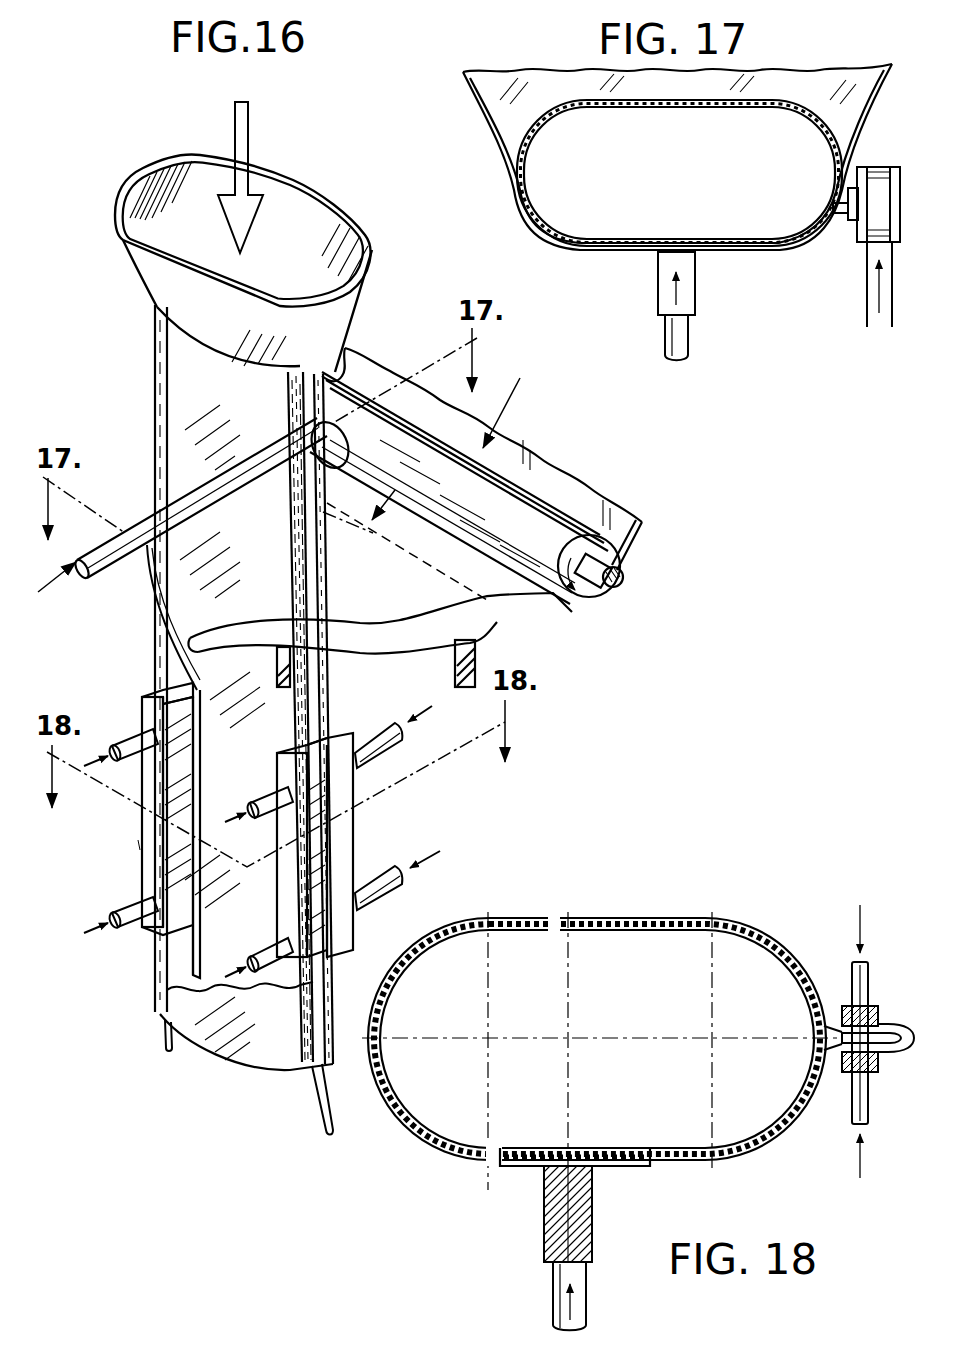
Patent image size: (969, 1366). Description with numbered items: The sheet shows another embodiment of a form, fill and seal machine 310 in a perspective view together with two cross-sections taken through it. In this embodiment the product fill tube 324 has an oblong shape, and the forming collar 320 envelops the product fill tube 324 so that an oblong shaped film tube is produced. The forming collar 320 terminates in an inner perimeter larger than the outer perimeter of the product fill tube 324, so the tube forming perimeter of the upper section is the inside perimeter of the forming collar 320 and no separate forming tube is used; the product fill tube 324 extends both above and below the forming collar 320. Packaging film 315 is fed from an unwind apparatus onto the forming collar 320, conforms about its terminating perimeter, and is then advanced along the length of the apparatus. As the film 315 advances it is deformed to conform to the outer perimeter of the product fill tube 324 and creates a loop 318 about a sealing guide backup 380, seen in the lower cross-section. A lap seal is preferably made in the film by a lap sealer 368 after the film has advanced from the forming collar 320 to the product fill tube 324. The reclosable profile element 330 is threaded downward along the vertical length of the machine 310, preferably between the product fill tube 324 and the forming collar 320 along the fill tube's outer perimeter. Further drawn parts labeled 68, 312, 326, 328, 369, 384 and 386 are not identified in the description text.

In FIG. 16, the clamp assembly 68 is at (136, 848).
In FIG. 16, the form, fill and seal machine 310 is at (106, 186).
In FIG. 16, the roller shaft 312 is at (606, 582).
In FIG. 16, the packaging film 315 is at (548, 465).
In FIG. 17, the packaging film 315 is at (525, 68).
In FIG. 18, the packaging film 315 is at (651, 916).
In FIG. 18, the loop 318 is at (884, 1026).
In FIG. 16, the forming collar 320 is at (502, 612).
In FIG. 16, the product fill tube 324 is at (345, 355).
In FIG. 17, the product fill tube 324 is at (758, 80).
In FIG. 18, the product fill tube 324 is at (637, 932).
In FIG. 16, the funnel 326 is at (305, 222).
In FIG. 16, the legs 328 is at (165, 1038).
In FIG. 16, the reclosable profile element 330 is at (138, 530).
In FIG. 17, the reclosable profile element 330 is at (880, 318).
In FIG. 18, the reclosable profile element 330 is at (892, 1058).
In FIG. 17, the lap sealer 368 is at (703, 305).
In FIG. 18, the lap sealer 368 is at (542, 1231).
In FIG. 16, the left clamp bar 369 is at (150, 702).
In FIG. 18, the sealing guide backup 380 is at (818, 1034).
In FIG. 16, the right clamp bar 384 is at (343, 840).
In FIG. 18, the right clamp bar 384 is at (852, 975).
In FIG. 16, the guide pins 386 is at (162, 962).
In FIG. 18, the guide pins 386 is at (850, 1102).